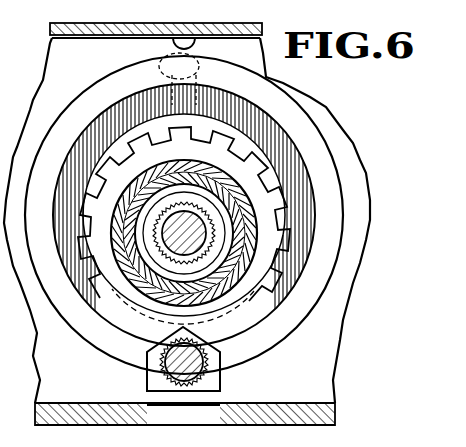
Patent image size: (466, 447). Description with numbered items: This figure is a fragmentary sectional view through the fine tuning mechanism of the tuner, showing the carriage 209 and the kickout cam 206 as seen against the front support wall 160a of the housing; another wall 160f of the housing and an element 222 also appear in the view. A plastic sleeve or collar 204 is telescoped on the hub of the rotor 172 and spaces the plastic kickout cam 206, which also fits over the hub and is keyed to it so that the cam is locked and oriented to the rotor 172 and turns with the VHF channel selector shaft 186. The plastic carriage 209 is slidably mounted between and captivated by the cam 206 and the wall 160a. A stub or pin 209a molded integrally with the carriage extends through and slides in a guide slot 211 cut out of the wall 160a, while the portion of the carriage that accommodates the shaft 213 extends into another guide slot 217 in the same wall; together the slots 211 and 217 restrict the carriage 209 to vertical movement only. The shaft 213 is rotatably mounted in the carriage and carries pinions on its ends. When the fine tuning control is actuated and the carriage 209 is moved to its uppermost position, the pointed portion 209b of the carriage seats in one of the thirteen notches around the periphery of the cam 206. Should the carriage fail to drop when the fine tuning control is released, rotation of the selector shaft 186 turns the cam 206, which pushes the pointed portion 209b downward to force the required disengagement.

The front support wall 160a is at (116, 22).
The housing bottom wall 160f is at (333, 412).
The guide slot 211 is at (186, 37).
The stub or pin 209a is at (165, 62).
The outer ring 222 is at (300, 104).
The kickout cam 206 is at (248, 173).
The carriage 209 is at (316, 162).
The sleeve or collar 204 is at (266, 187).
The VHF channel selector shaft 186 is at (245, 202).
The rotor 172 is at (200, 223).
The pointed portion 209b is at (148, 326).
The shaft 213 is at (207, 362).
The guide slot 217 is at (212, 396).